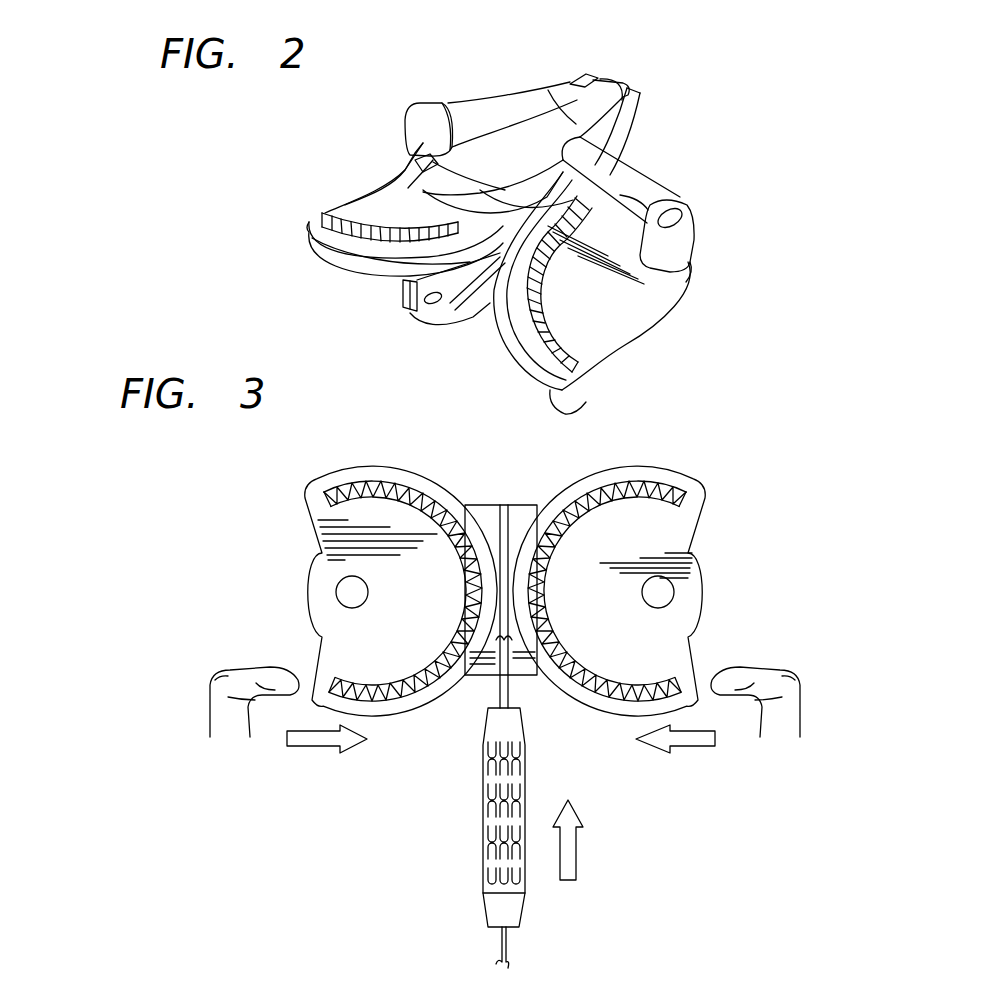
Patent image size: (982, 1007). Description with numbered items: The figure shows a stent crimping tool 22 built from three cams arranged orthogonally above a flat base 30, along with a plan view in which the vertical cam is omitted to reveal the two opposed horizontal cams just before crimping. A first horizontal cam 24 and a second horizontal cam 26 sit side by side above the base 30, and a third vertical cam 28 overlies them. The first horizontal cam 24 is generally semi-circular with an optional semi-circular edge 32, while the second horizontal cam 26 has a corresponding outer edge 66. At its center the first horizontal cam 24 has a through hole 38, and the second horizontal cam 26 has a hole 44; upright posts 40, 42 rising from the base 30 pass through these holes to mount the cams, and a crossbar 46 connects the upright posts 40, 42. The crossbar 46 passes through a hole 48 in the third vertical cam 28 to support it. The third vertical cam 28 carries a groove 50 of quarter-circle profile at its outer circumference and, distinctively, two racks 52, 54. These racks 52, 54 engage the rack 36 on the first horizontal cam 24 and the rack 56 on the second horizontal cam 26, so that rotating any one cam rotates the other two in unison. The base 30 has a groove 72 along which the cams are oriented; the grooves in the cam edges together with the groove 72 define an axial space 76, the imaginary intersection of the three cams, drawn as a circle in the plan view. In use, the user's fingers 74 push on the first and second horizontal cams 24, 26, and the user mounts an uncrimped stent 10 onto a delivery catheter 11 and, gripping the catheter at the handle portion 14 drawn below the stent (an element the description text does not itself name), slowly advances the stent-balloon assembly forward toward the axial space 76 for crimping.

In FIG. 3, the uncrimped stent 10 is at (486, 841).
In FIG. 3, the delivery catheter 11 is at (512, 945).
In FIG. 3, the handle 14 is at (512, 912).
In FIG. 2, the stent crimping tool 22 is at (734, 147).
In FIG. 3, the stent crimping tool 22 is at (277, 553).
In FIG. 2, the first horizontal cam 24 is at (372, 187).
In FIG. 3, the first horizontal cam 24 is at (318, 490).
In FIG. 2, the second horizontal cam 26 is at (652, 290).
In FIG. 3, the second horizontal cam 26 is at (688, 485).
In FIG. 2, the third vertical cam 28 is at (618, 88).
In FIG. 2, the base 30 is at (463, 323).
In FIG. 3, the base 30 is at (520, 505).
In FIG. 2, the semi-circular edge 32 is at (340, 258).
In FIG. 2, the rack 36 is at (326, 213).
In FIG. 3, the rack 36 is at (470, 598).
In FIG. 2, the through hole 38 is at (395, 160).
In FIG. 2, the upright post 40 is at (428, 123).
In FIG. 3, the upright post 40 is at (350, 594).
In FIG. 2, the upright post 42 is at (694, 236).
In FIG. 3, the upright post 42 is at (662, 594).
In FIG. 2, the hole 44 is at (692, 268).
In FIG. 2, the crossbar 46 is at (650, 186).
In FIG. 2, the hole 48 is at (578, 124).
In FIG. 2, the groove 50 is at (650, 84).
In FIG. 2, the rack 52 is at (640, 125).
In FIG. 2, the rack 54 is at (399, 184).
In FIG. 2, the rack 56 is at (590, 338).
In FIG. 3, the rack 56 is at (545, 598).
In FIG. 2, the outer edge 66 is at (566, 414).
In FIG. 2, the groove 72 is at (418, 305).
In FIG. 3, the groove 72 is at (500, 505).
In FIG. 3, the user's fingers 74 is at (213, 712).
In FIG. 3, the axial space 76 is at (520, 680).